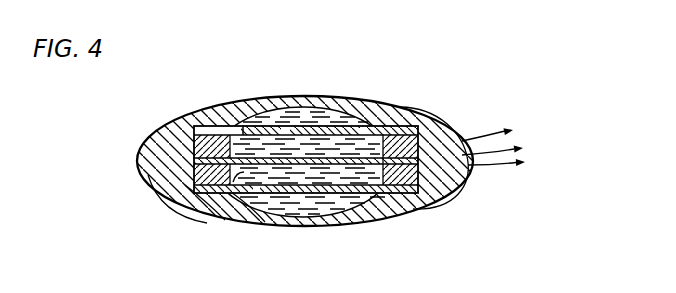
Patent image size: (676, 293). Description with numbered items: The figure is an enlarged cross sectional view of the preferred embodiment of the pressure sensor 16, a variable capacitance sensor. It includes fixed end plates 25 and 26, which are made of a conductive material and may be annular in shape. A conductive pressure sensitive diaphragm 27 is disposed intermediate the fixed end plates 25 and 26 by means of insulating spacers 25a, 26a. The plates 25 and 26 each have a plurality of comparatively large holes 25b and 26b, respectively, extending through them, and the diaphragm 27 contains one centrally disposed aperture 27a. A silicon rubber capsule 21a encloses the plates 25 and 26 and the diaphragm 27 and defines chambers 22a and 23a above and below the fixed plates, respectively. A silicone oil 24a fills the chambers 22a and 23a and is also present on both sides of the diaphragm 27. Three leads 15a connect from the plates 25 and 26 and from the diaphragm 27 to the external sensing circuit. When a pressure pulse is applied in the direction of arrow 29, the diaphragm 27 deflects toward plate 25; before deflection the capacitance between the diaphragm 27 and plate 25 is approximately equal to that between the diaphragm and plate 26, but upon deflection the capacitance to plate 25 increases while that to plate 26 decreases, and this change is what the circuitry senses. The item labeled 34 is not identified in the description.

The pressure sensor 16 is at (309, 40).
The fixed end plate 25 is at (430, 115).
The insulating spacer 25a is at (196, 150).
The holes 25b is at (252, 115).
The fixed end plate 26 is at (437, 207).
The insulating spacer 26a is at (193, 177).
The holes 26b is at (255, 186).
The silicon rubber capsule 21a is at (407, 112).
The chamber 22a is at (312, 130).
The pressure sensitive diaphragm 27 is at (350, 157).
The aperture 27a is at (320, 200).
The chamber 23a is at (343, 205).
The silicone oil 24a is at (222, 218).
The arrow 29 is at (292, 256).
The leads 15a is at (529, 118).
The element 34 is at (440, 285).